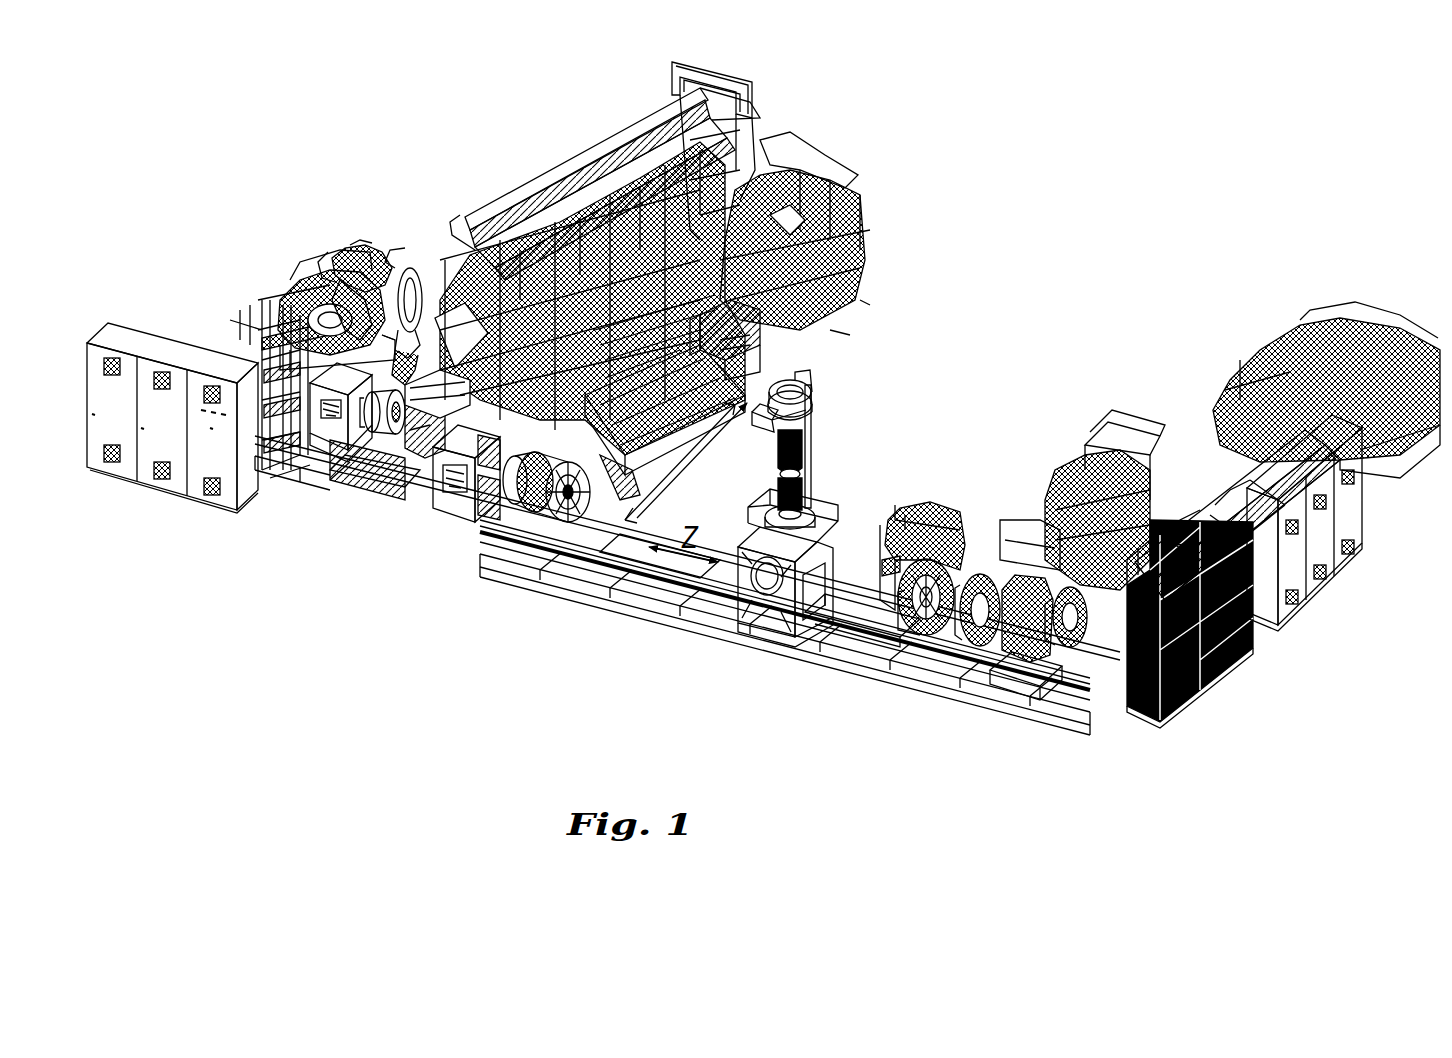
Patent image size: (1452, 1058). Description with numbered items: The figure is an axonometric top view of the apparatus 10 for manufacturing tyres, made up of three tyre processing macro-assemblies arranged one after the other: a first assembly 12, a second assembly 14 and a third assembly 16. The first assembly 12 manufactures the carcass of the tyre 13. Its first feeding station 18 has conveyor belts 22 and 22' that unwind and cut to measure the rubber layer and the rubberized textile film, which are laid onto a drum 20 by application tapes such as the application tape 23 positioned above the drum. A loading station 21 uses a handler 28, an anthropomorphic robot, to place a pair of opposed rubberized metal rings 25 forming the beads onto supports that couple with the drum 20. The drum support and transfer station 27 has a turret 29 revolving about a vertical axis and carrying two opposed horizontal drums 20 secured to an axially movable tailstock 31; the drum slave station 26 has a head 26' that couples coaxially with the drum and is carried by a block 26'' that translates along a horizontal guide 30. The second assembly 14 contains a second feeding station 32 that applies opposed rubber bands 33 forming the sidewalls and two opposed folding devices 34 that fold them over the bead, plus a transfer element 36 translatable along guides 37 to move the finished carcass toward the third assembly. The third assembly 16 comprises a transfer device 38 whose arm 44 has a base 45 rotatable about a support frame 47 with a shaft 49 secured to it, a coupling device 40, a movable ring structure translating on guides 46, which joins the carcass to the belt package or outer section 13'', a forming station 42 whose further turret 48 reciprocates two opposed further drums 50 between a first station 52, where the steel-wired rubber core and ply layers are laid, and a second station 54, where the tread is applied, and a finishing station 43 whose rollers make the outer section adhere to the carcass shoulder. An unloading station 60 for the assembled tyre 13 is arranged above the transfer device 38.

The apparatus for manufacturing tyres 10 is at (1010, 140).
The first assembly 12 is at (243, 566).
The tyre 13 is at (842, 388).
The belt package or outer section 13'' is at (937, 659).
The second assembly 14 is at (550, 630).
The third assembly 16 is at (895, 725).
The first feeding station 18 is at (622, 106).
The drum 20 is at (398, 470).
The loading station 21 is at (317, 260).
The conveyor belt 22 is at (605, 156).
The conveyor belt 22' is at (605, 205).
The application tape 23 is at (468, 300).
The rubberized metal rings 25 is at (400, 277).
The drum slave station 26 is at (327, 448).
The head 26' is at (343, 515).
The block 26'' is at (344, 477).
The drum support and transfer station 27 is at (462, 503).
The handler 28 is at (353, 250).
The turret 29 is at (482, 447).
The horizontal guide 30 is at (380, 412).
The tailstock 31 is at (417, 427).
The second feeding station 32 is at (822, 297).
The bands 33 is at (712, 347).
The folding devices 34 is at (627, 492).
The transfer element 36 is at (543, 527).
The guides 37 is at (680, 560).
The transfer device 38 is at (764, 600).
The coupling device 40 is at (903, 617).
The forming station 42 is at (1060, 688).
The finishing station 43 is at (935, 515).
The arm 44 is at (812, 492).
The base 45 is at (898, 568).
The guides 46 is at (837, 630).
The support frame 47 is at (737, 627).
The further turret 48 is at (1017, 663).
The shaft 49 is at (780, 470).
The further drums 50 is at (968, 610).
The first station 52 is at (1183, 437).
The second station 54 is at (1097, 428).
The unloading station 60 is at (815, 430).